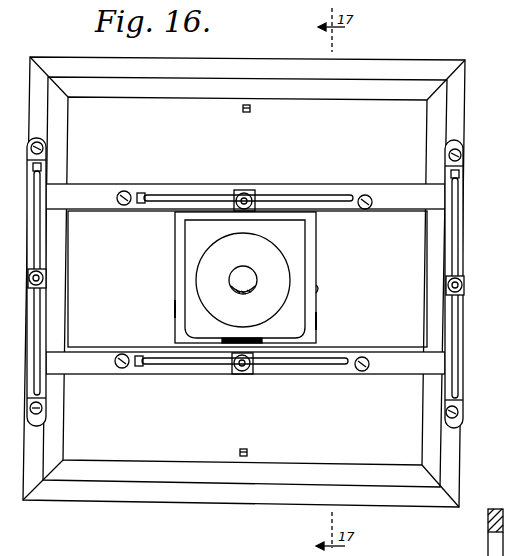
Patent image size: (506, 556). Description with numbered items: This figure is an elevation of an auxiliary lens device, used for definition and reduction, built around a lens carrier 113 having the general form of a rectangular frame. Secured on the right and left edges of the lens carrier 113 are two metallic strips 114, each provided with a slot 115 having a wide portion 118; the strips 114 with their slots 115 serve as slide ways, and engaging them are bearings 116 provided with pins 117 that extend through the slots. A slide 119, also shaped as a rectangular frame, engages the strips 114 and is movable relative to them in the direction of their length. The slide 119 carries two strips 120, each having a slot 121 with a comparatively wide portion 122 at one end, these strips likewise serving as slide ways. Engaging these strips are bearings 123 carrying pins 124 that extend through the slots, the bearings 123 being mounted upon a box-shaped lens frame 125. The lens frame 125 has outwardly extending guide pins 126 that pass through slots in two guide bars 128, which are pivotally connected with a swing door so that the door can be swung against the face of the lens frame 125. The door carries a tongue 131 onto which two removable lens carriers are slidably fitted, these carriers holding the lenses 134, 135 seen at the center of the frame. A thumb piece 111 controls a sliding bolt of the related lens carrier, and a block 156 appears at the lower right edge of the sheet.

The thumb piece 111 is at (250, 106).
The lens carrier 113 is at (363, 112).
The metallic strip 114 is at (34, 182).
The slot 115 is at (37, 228).
The bearing 116 is at (30, 272).
The pin 117 is at (31, 285).
The wide portion 118 is at (42, 167).
The slide 119 is at (245, 279).
The strip 120 is at (290, 197).
The slot 121 is at (326, 202).
The wide portion 122 is at (142, 193).
The bearing 123 is at (243, 192).
The pin 124 is at (256, 197).
The lens frame 125 is at (316, 218).
The guide pin 126 is at (318, 290).
The guide bar 128 is at (175, 309).
The tongue 131 is at (226, 339).
The lens 134 is at (262, 250).
The lens 135 is at (247, 281).
The block 156 is at (488, 516).